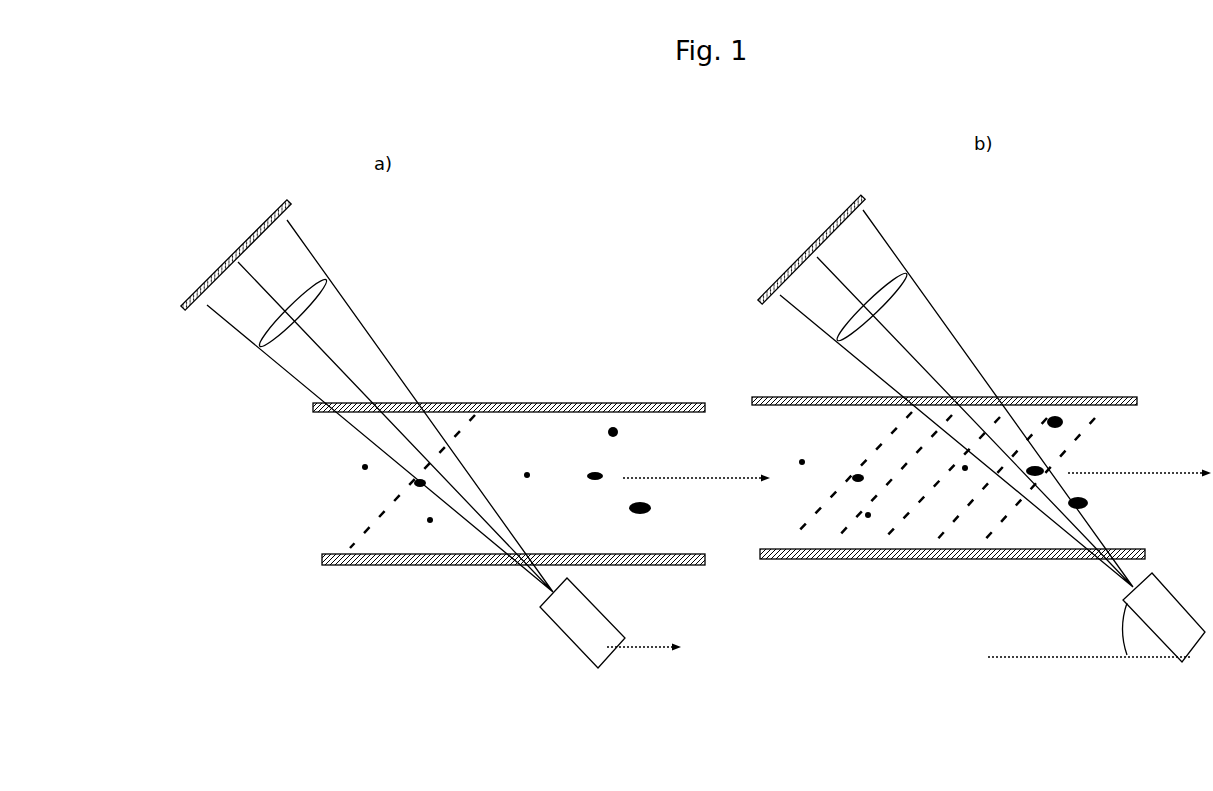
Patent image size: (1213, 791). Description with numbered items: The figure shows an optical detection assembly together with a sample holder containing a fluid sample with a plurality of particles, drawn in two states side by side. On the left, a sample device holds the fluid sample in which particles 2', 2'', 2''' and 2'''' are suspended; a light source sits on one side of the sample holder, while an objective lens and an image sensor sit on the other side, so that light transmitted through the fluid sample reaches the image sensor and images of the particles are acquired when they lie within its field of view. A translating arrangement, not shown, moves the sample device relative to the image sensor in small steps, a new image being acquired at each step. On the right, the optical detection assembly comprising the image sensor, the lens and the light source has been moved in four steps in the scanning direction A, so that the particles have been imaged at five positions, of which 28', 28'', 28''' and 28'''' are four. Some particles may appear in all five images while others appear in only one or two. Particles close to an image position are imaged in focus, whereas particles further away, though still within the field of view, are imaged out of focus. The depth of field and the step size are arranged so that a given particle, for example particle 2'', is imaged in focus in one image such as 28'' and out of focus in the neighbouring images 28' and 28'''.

The position 28' is at (862, 521).
The position 28'' is at (910, 534).
The position 28''' is at (964, 529).
The position 28'''' is at (1034, 524).
The particle 2' is at (386, 564).
The particle 2'' is at (565, 374).
The particle 2''' is at (629, 354).
The particle 2'''' is at (626, 546).
The scanning direction A is at (637, 653).